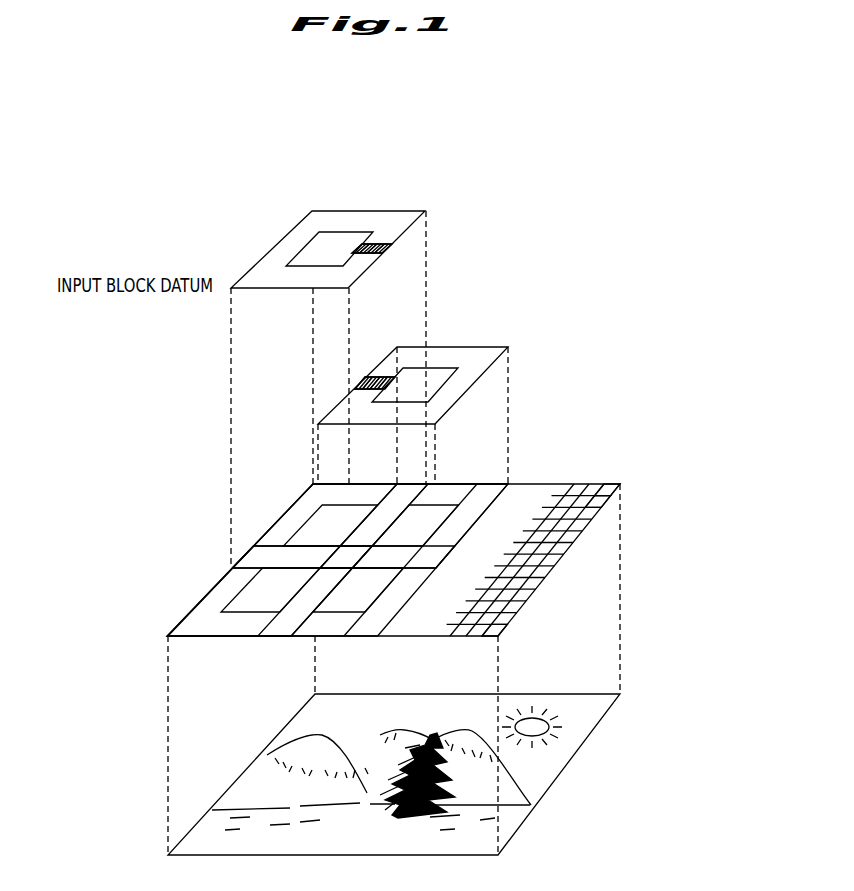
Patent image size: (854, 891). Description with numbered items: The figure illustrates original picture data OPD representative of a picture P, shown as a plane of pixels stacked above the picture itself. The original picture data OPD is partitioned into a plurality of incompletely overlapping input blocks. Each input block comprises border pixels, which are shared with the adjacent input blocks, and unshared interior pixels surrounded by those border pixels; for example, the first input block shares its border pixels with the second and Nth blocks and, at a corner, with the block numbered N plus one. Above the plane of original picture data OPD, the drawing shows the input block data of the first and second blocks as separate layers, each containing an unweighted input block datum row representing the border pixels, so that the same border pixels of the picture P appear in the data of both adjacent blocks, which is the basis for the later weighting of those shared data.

The original picture data OPD is at (560, 552).
The picture P is at (568, 763).